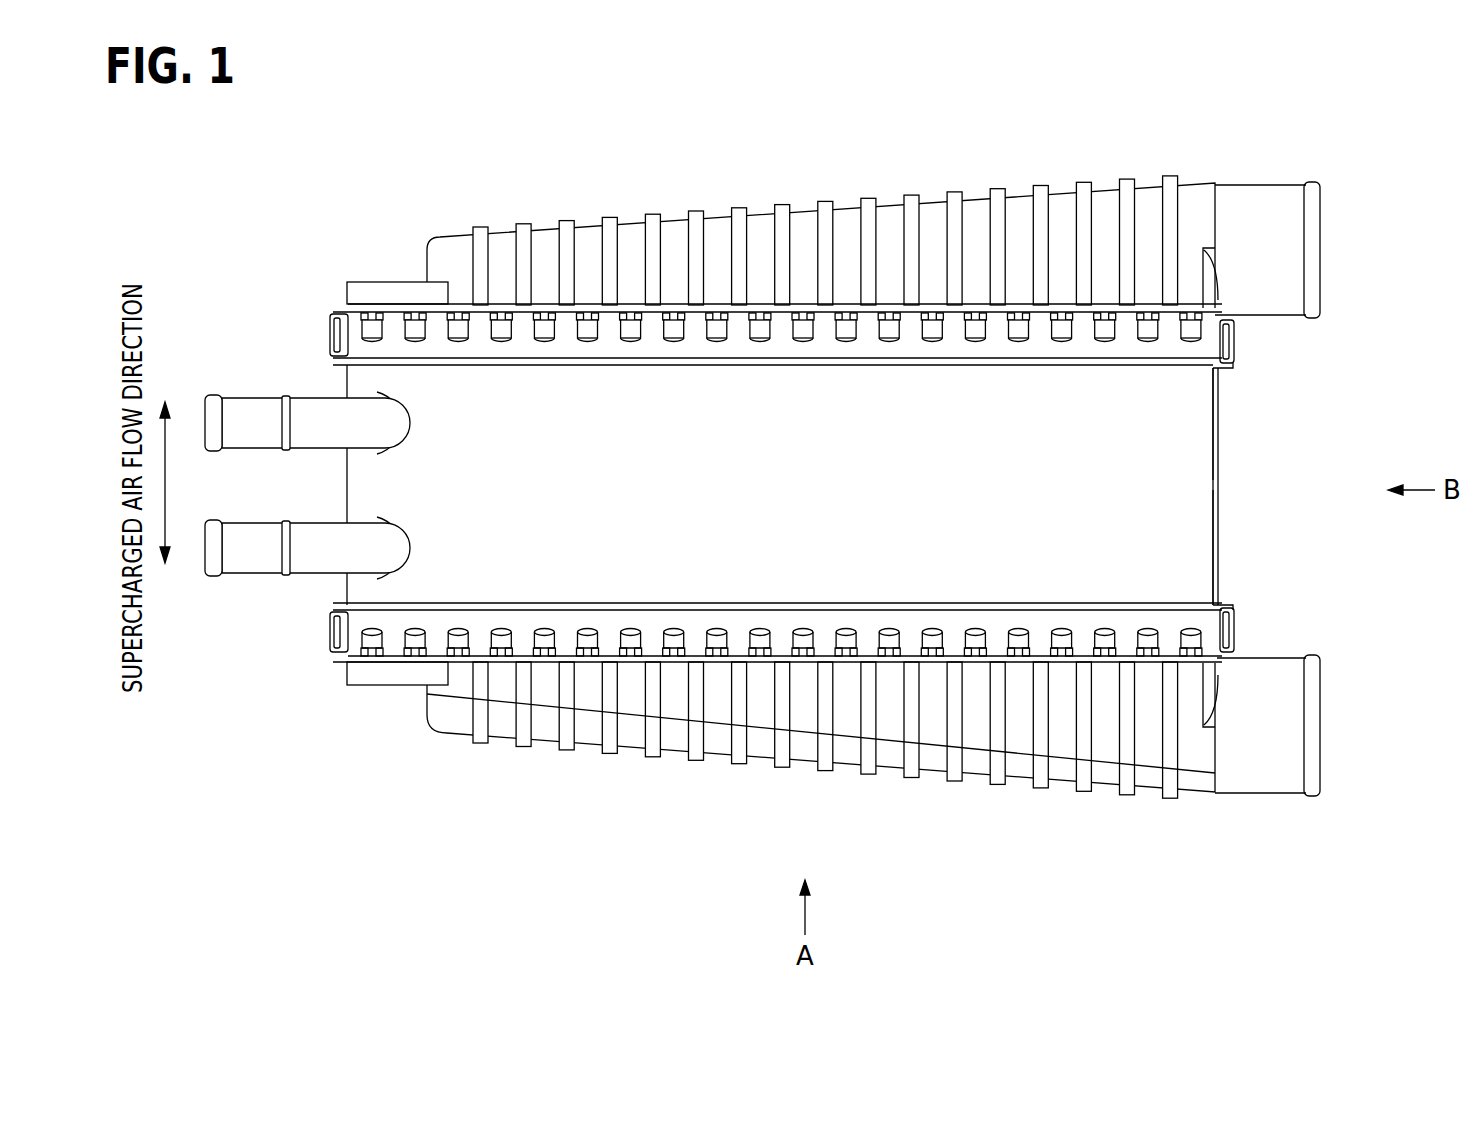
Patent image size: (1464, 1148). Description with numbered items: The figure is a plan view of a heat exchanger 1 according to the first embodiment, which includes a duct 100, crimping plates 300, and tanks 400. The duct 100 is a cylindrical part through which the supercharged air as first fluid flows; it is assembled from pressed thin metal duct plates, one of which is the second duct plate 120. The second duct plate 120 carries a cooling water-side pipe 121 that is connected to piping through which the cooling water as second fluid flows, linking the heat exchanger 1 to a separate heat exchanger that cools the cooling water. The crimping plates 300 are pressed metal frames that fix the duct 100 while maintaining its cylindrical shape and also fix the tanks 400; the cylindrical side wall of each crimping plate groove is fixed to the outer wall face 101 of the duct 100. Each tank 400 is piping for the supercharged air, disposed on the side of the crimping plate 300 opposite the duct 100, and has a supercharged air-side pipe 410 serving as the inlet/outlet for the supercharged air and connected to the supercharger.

The heat exchanger 1 is at (1270, 412).
The duct 100 is at (1218, 530).
The outer wall face 101 is at (1190, 464).
The second duct plate 120 is at (1190, 570).
The cooling water-side pipe 121 is at (248, 393).
The crimping plate 300 is at (1212, 348).
The tank 400 is at (938, 200).
The supercharged air-side pipe 410 is at (1264, 185).